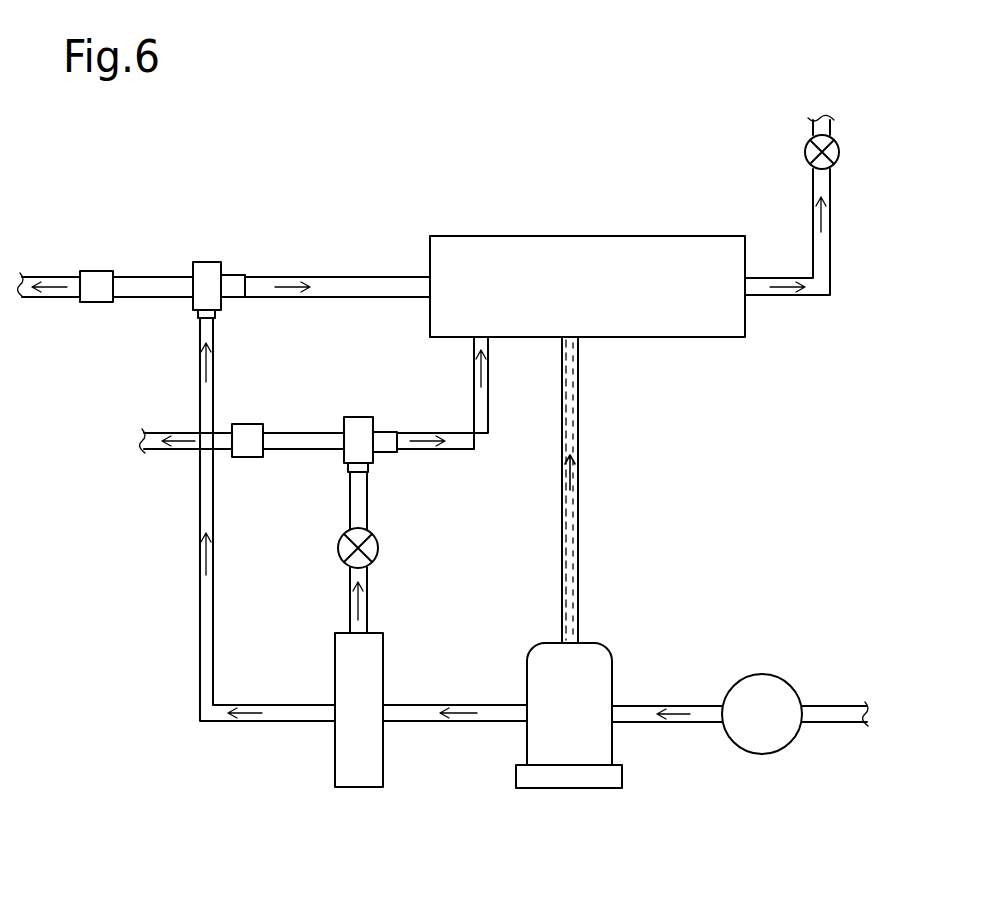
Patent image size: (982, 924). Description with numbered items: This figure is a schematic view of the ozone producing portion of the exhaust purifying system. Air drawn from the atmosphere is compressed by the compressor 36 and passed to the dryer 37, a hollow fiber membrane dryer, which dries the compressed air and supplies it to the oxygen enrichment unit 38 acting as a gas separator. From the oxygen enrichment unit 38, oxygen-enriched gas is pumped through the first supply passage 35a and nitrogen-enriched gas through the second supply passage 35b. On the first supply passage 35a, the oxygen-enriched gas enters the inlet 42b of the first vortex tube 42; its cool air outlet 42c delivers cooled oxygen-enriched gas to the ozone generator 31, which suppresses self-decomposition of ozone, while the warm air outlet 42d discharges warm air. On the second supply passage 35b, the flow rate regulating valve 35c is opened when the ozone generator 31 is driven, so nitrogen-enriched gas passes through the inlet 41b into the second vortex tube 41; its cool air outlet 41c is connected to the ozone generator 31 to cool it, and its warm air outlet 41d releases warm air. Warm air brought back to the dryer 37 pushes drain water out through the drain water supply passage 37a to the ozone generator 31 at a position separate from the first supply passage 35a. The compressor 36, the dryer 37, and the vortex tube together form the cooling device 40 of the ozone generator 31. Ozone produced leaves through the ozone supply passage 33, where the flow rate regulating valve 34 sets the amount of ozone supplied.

The ozone generator 31 is at (702, 236).
The ozone supply passage 33 is at (830, 249).
The flow rate regulating valve 34 is at (840, 152).
The first supply passage 35a is at (199, 633).
The second supply passage 35b is at (368, 511).
The flow rate regulating valve 35c is at (338, 544).
The compressor 36 is at (762, 754).
The dryer 37 is at (585, 789).
The drain water supply passage 37a is at (578, 545).
The oxygen enrichment unit 38 is at (384, 763).
The cooling device 40 is at (716, 456).
The second vortex tube 41 is at (310, 432).
The inlet 41b is at (350, 482).
The cool air outlet 41c is at (399, 432).
The warm air outlet 41d is at (247, 424).
The first vortex tube 42 is at (204, 262).
The inlet 42b is at (200, 325).
The cool air outlet 42c is at (246, 275).
The warm air outlet 42d is at (96, 271).